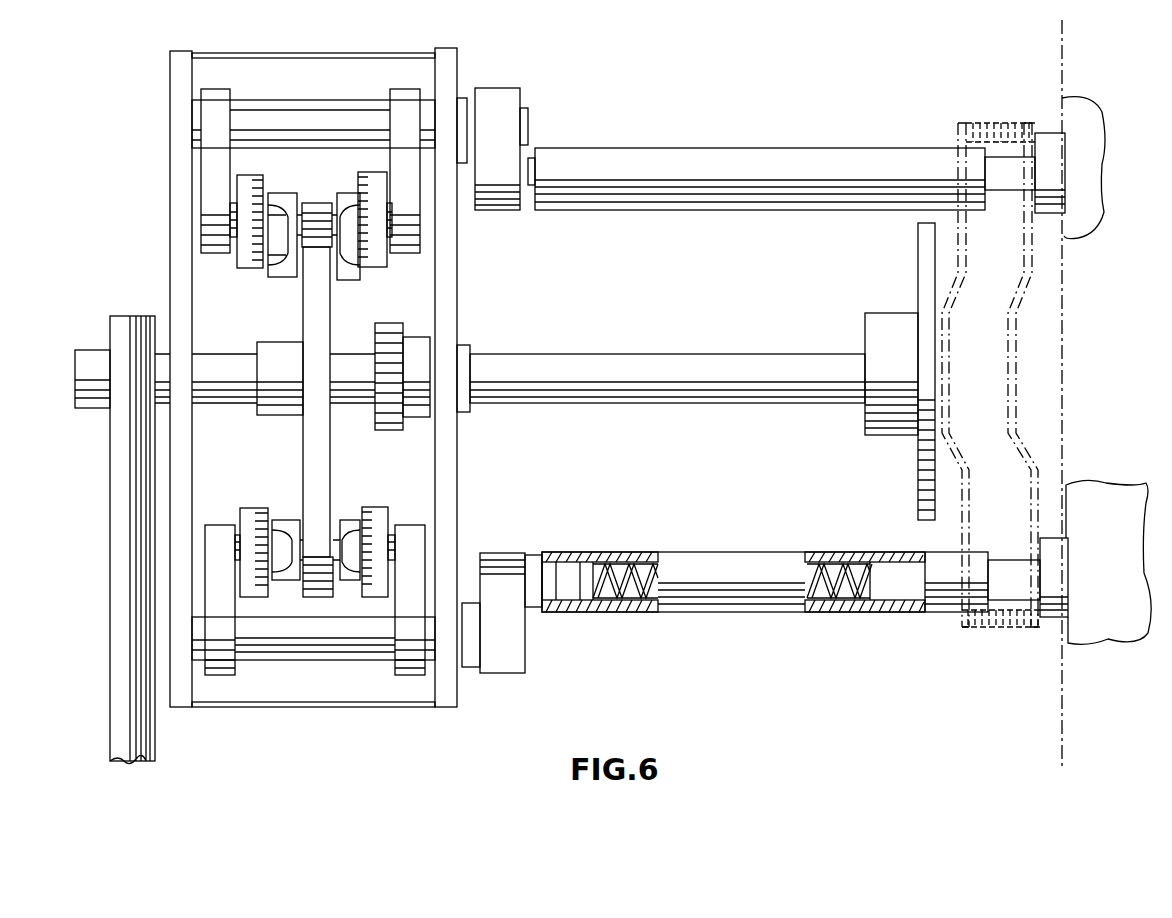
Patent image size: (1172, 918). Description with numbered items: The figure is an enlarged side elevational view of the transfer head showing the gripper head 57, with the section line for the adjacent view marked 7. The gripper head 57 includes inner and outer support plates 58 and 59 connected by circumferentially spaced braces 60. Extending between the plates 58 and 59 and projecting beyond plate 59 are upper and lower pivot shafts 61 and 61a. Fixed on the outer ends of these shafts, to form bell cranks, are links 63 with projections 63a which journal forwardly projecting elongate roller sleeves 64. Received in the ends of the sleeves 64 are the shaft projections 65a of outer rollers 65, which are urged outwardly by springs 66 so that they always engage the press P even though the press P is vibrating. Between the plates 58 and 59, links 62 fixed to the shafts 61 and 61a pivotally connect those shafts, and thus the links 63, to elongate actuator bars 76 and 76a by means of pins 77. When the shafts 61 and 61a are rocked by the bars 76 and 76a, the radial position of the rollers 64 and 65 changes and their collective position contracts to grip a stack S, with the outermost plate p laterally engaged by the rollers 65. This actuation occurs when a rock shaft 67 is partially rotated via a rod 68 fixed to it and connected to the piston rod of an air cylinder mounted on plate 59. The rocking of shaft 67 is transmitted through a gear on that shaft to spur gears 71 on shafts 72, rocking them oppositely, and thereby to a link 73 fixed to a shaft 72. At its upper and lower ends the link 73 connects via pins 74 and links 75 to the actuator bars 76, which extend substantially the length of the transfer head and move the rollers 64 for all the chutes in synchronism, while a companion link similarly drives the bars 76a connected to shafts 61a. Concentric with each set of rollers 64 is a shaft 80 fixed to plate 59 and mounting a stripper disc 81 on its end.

The gripper head 57 is at (895, 108).
The inner support plate 58 is at (450, 70).
The outer support plate 59 is at (176, 100).
The braces 60 is at (340, 44).
The upper pivot shaft 61 is at (346, 113).
The lower pivot shaft 61a is at (327, 665).
The links 62 is at (214, 96).
The links 63 is at (501, 90).
The projections 63a is at (537, 203).
The roller sleeves 64 is at (806, 155).
The outer rollers 65 is at (1044, 133).
The shaft projections 65a is at (897, 600).
The springs 66 is at (639, 560).
The rock shaft 67 is at (224, 386).
The rod 68 is at (112, 498).
The spur gears 71 is at (374, 341).
The shafts 72 is at (358, 395).
The link 73 is at (316, 421).
The pins 74 is at (314, 211).
The links 75 is at (284, 276).
The actuator bars 76 is at (250, 177).
The actuator bars 76a is at (370, 264).
The pins 77 is at (233, 212).
The shaft 80 is at (716, 352).
The stripper disc 81 is at (918, 267).
The stack S is at (1022, 345).
The press P is at (1090, 112).
The outermost plate p is at (1008, 122).
The section line 7- 7 is at (1042, 757).